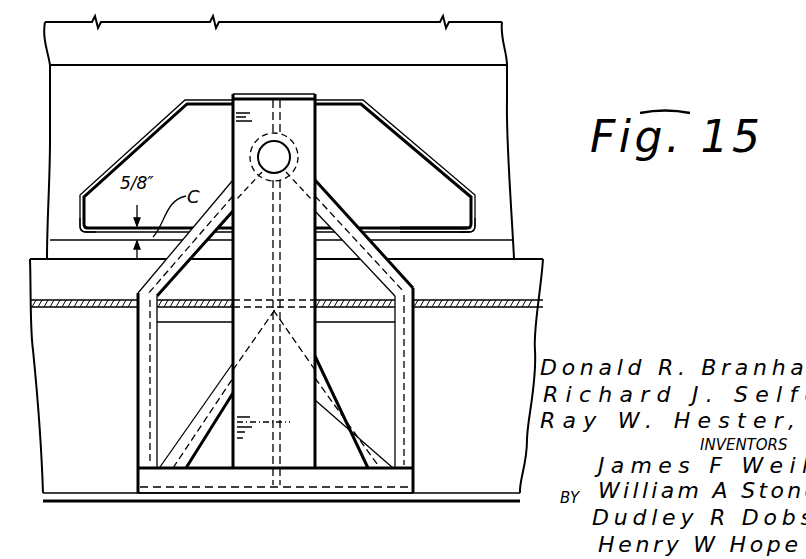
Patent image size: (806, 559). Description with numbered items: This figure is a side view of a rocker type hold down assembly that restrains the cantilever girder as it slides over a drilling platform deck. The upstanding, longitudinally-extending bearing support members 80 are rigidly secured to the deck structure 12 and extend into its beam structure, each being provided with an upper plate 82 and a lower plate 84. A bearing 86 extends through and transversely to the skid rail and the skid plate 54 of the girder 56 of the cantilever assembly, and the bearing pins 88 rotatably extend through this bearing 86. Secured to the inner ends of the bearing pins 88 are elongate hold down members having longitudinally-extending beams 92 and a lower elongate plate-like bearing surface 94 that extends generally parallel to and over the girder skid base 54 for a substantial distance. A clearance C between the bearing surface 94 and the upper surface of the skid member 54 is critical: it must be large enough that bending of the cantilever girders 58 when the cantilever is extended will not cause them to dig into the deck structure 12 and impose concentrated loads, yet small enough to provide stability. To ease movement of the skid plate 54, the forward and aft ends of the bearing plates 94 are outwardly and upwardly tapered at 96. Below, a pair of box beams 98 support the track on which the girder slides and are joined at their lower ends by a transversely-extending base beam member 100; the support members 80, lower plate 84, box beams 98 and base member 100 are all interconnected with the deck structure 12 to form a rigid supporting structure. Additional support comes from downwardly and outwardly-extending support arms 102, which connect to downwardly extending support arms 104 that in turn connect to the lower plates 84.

The deck structure 12 is at (190, 300).
The skid plate 54 is at (493, 241).
The girder 56 is at (382, 51).
The cantilever girders 58 is at (473, 99).
The bearing support members 80 is at (250, 362).
The upper plate 82 is at (290, 94).
The lower plate 84 is at (263, 480).
The bearing 86 is at (297, 137).
The bearing pins 88 is at (284, 159).
The longitudinally-extending beams 92 is at (207, 148).
The bearing surface 94 is at (447, 233).
The tapered ends 96 is at (477, 233).
The box beams 98 is at (80, 386).
The base beam member 100 is at (385, 500).
The support arms 102 is at (157, 272).
The downwardly extending support arms 104 is at (147, 425).